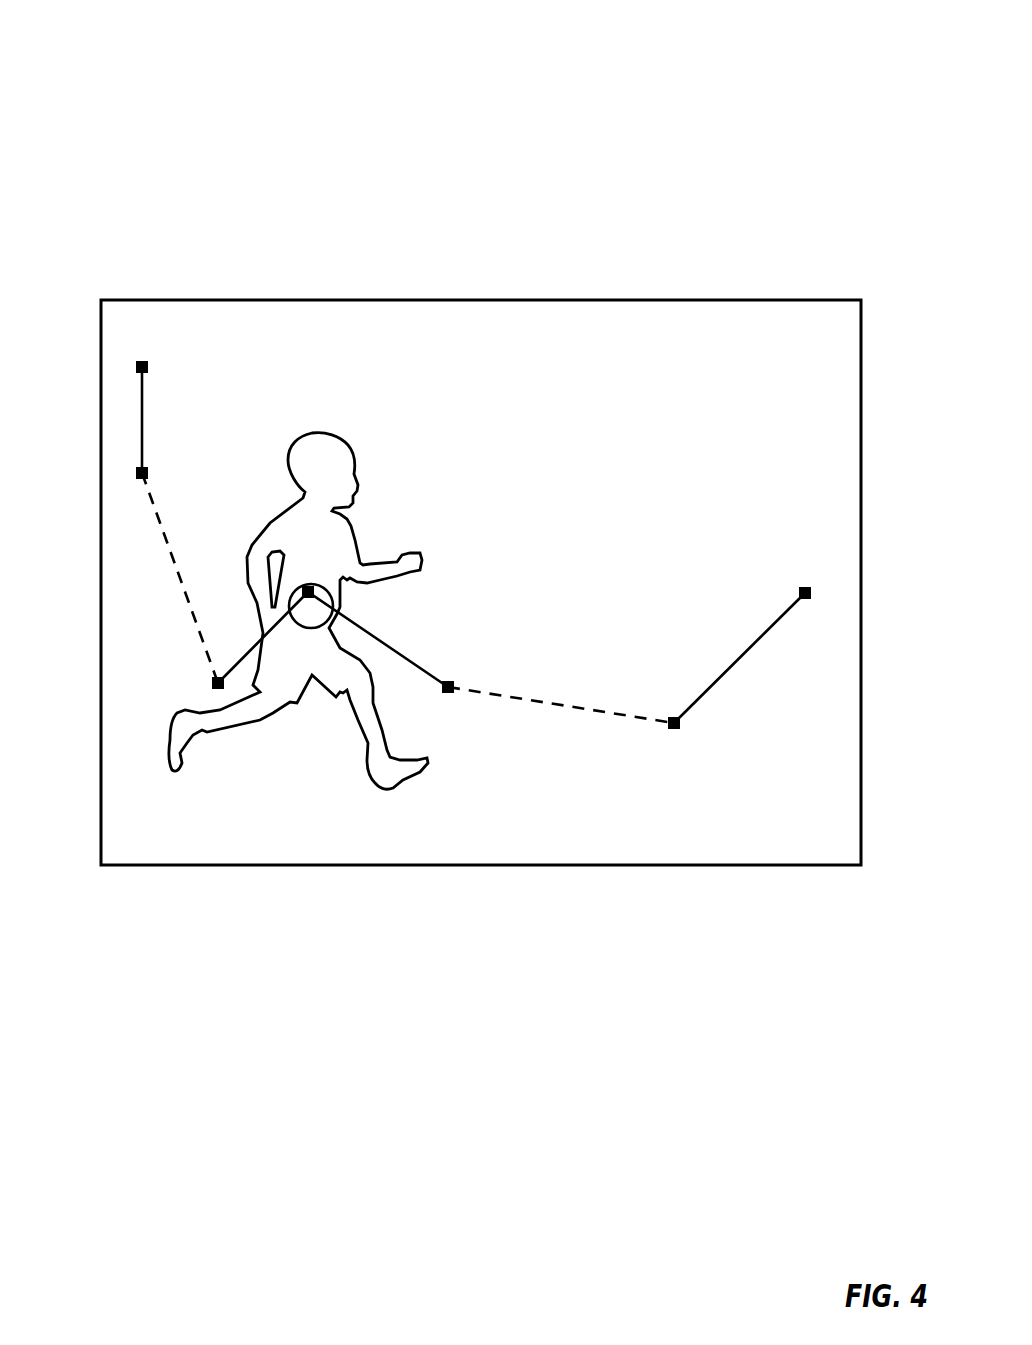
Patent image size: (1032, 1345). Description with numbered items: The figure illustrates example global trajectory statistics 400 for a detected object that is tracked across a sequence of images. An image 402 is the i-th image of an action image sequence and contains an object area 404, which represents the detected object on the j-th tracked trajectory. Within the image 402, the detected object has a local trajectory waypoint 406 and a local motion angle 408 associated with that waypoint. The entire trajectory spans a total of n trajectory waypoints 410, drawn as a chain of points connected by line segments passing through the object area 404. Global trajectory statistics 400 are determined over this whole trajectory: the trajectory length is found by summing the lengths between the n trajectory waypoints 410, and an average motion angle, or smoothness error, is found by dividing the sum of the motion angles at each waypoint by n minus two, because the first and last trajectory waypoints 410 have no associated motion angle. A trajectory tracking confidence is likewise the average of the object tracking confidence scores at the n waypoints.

The global trajectory statistics 400 is at (104, 48).
The image 402 is at (192, 299).
The object area 404 is at (333, 433).
The local trajectory waypoint 406 is at (308, 592).
The local motion angle 408 is at (292, 627).
The trajectory waypoints 410 is at (147, 360).